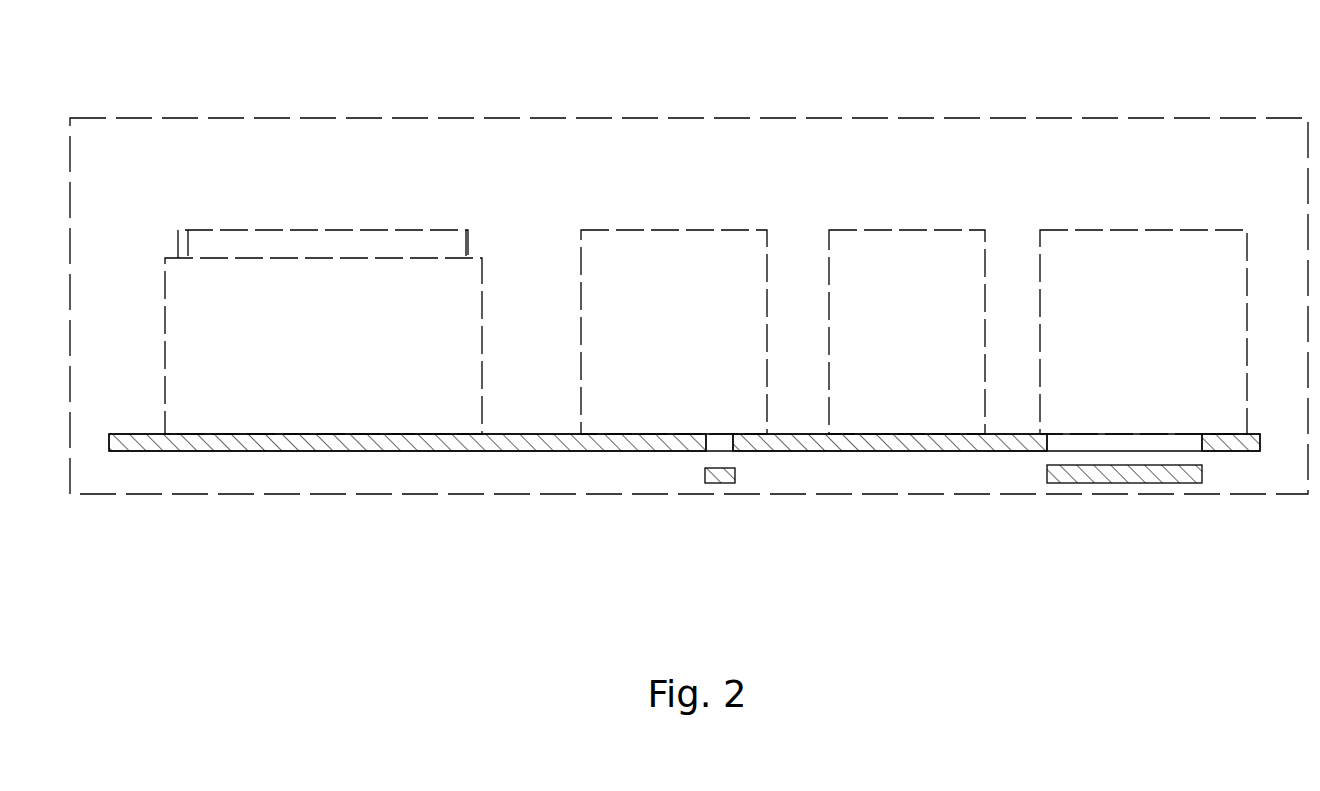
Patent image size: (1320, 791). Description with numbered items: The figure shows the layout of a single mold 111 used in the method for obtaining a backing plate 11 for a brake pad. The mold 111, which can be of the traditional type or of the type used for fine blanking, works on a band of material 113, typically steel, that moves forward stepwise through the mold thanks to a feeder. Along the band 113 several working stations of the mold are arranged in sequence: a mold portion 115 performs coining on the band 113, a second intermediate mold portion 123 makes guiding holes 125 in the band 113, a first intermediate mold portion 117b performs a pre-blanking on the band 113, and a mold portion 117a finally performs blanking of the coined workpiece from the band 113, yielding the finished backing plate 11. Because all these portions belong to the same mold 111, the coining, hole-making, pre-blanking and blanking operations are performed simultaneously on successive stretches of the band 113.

The mold 111 is at (52, 109).
The band of material 113 is at (146, 453).
The mold portion for coining 115 is at (291, 352).
The second intermediate mold portion 123 is at (647, 352).
The first intermediate mold portion 117b is at (873, 352).
The mold portion for blanking 117a is at (1108, 352).
The guiding holes 125 is at (718, 442).
The backing plate 11 is at (1131, 484).